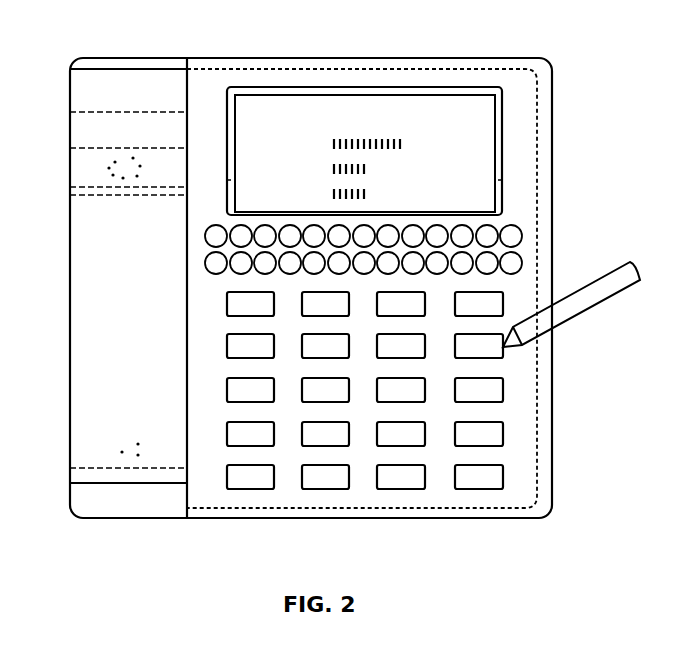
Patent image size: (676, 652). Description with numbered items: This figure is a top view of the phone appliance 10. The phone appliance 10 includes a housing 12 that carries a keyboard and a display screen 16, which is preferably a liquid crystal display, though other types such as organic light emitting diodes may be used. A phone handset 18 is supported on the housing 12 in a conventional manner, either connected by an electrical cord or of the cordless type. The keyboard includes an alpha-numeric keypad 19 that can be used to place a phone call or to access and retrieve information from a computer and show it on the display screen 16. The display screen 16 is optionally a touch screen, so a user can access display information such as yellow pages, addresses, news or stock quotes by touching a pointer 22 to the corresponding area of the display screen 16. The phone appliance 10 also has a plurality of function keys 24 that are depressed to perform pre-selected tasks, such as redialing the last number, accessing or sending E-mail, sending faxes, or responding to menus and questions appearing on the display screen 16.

The phone appliance 10 is at (311, 57).
The housing 12 is at (297, 518).
The display screen 16 is at (477, 157).
The phone handset 18 is at (70, 332).
The alpha-numeric keypad 19 is at (360, 473).
The pointer 22 is at (617, 262).
The function keys 24 is at (505, 302).